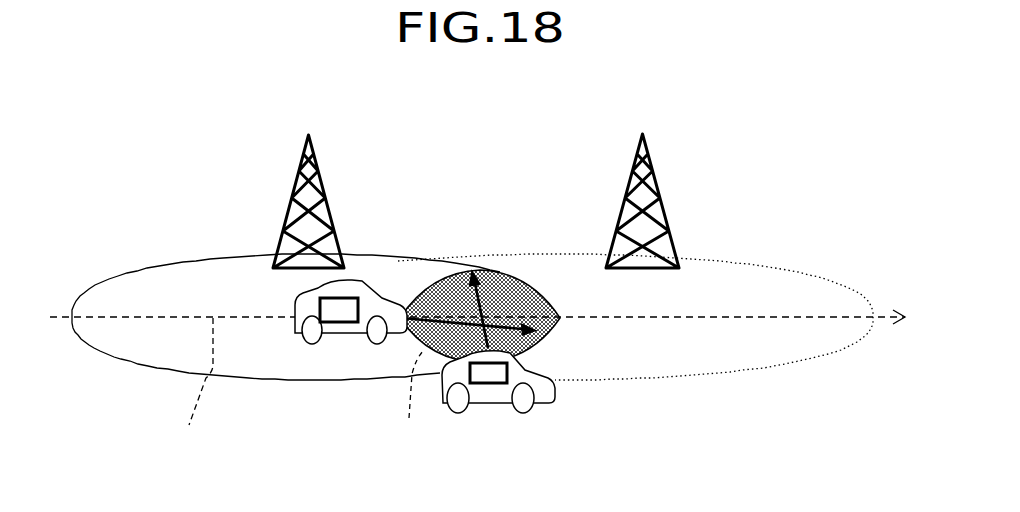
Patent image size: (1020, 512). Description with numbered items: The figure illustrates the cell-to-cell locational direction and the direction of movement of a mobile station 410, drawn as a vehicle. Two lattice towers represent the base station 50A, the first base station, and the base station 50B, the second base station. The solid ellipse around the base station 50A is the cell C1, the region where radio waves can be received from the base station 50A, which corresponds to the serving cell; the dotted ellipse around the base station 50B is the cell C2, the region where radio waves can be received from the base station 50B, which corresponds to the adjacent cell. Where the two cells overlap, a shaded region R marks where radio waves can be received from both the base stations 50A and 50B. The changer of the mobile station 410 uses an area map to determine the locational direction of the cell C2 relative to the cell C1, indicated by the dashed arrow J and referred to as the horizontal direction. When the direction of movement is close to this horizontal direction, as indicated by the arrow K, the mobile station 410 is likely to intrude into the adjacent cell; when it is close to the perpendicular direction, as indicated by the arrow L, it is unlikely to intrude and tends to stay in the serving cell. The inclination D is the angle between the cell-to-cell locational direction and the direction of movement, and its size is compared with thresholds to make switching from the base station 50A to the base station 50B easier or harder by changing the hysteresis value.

The base station 50A is at (310, 173).
The base station 50B is at (646, 173).
The mobile station 410 is at (346, 306).
The cell C1 is at (286, 299).
The cell C2 is at (635, 299).
The shaded region R is at (537, 297).
The arrow L is at (493, 270).
The inclination D is at (458, 303).
The dashed arrow J is at (194, 383).
The arrow K is at (411, 397).